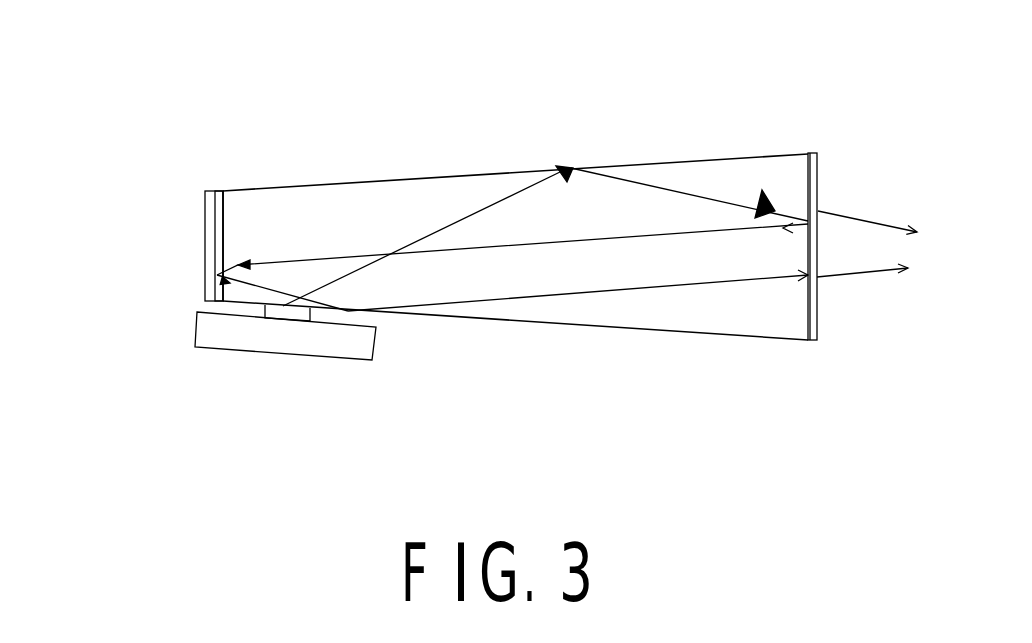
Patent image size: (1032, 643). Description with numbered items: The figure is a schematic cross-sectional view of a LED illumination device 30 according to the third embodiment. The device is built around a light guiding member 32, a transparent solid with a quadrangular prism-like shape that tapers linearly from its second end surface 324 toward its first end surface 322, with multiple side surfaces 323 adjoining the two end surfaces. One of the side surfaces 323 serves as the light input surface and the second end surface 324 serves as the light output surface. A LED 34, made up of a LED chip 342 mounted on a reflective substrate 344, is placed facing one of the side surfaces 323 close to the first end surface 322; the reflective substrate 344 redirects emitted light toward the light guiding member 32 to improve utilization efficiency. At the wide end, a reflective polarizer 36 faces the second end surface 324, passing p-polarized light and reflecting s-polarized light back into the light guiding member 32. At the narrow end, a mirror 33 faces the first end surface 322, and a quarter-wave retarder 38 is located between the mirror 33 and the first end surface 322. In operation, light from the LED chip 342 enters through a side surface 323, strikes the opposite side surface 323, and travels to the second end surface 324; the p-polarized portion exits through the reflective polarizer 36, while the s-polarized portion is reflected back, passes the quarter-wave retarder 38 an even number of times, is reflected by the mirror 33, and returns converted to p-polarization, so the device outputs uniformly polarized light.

The LED illumination device 30 is at (495, 63).
The light guiding member 32 is at (515, 249).
The first end surface 322 is at (226, 229).
The side surfaces 323 is at (638, 331).
The second end surface 324 is at (808, 176).
The mirror 33 is at (210, 205).
The LED 34 is at (201, 327).
The LED chip 342 is at (267, 311).
The reflective substrate 344 is at (203, 341).
The reflective polarizer 36 is at (812, 152).
The quarter-wave retarder 38 is at (221, 191).